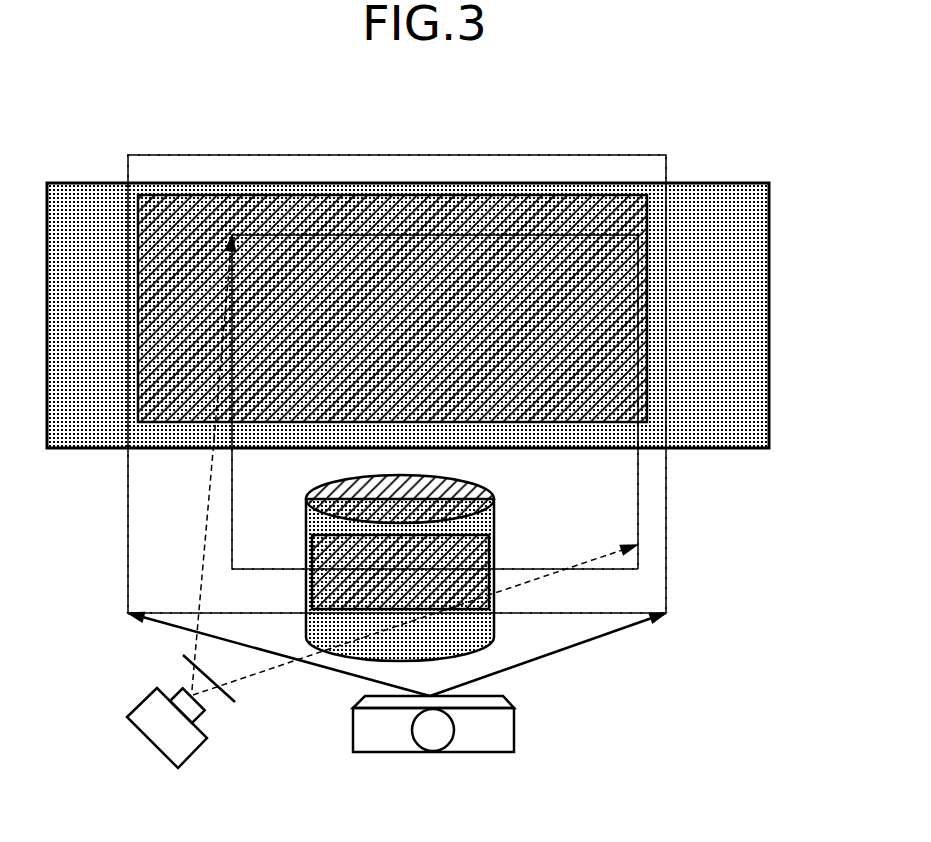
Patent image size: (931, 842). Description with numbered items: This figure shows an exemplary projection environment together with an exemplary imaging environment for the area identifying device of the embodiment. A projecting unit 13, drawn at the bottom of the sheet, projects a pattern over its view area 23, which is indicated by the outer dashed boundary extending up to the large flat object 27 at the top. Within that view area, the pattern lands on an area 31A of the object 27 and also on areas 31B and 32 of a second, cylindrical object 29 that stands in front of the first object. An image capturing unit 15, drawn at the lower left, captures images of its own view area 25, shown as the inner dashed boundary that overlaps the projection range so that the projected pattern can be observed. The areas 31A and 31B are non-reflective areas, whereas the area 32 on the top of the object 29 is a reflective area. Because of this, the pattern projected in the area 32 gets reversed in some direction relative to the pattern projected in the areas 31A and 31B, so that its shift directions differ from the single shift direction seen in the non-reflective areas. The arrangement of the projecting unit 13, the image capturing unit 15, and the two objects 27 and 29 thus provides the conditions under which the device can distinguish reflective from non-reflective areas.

The projecting unit 13 is at (514, 727).
The image capturing unit 15 is at (198, 753).
The view area 23 is at (666, 558).
The view area 25 is at (638, 512).
The object 27 is at (722, 183).
The object 29 is at (497, 628).
The area 31A is at (417, 193).
The area 31B is at (470, 550).
The area 32 is at (470, 495).